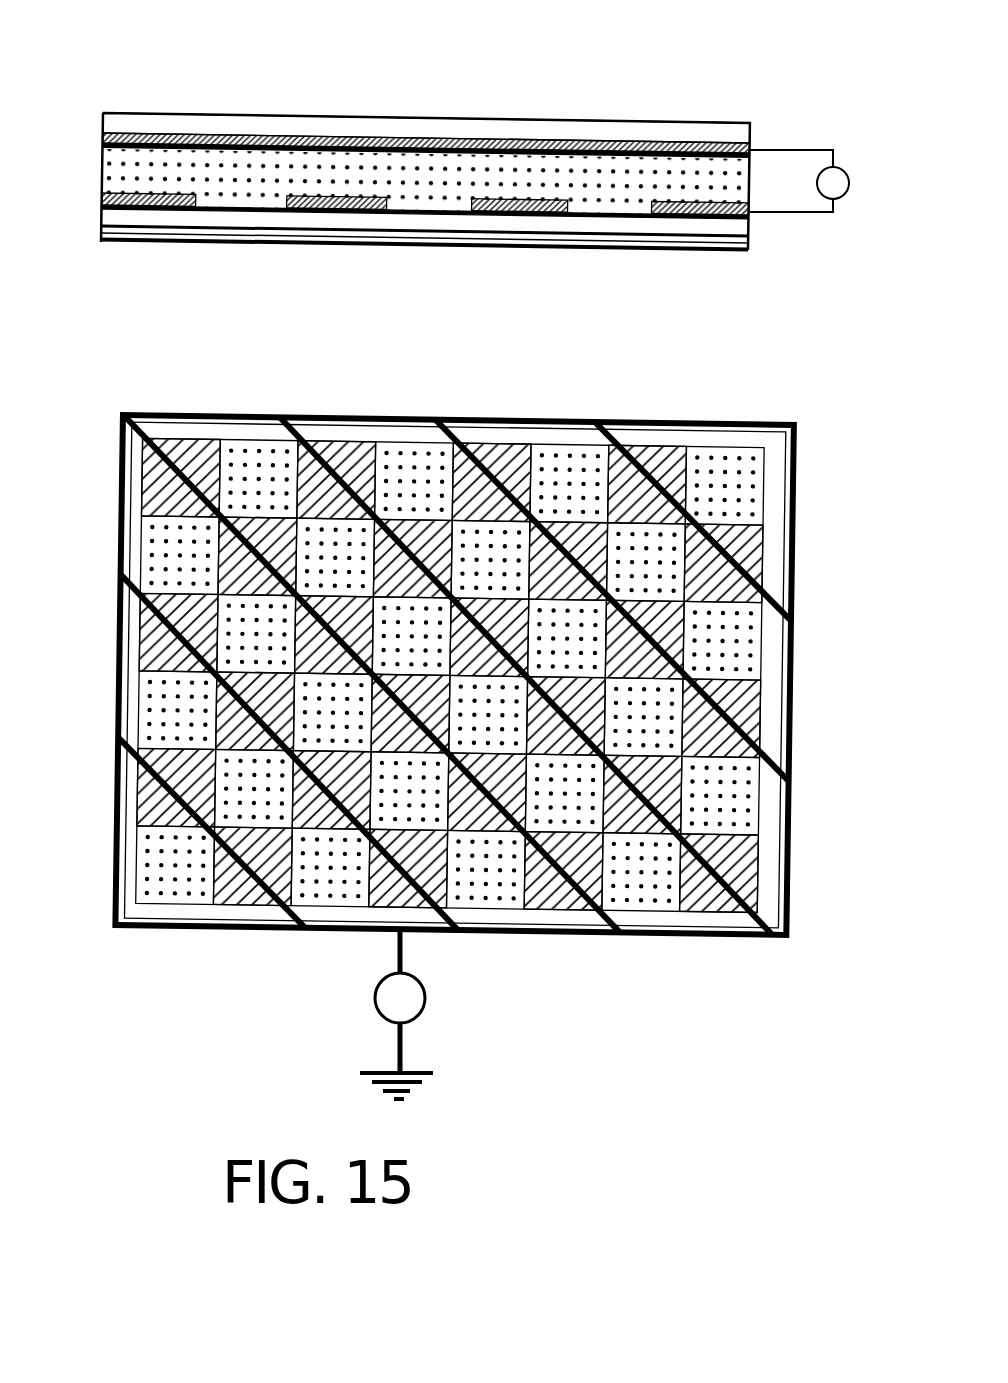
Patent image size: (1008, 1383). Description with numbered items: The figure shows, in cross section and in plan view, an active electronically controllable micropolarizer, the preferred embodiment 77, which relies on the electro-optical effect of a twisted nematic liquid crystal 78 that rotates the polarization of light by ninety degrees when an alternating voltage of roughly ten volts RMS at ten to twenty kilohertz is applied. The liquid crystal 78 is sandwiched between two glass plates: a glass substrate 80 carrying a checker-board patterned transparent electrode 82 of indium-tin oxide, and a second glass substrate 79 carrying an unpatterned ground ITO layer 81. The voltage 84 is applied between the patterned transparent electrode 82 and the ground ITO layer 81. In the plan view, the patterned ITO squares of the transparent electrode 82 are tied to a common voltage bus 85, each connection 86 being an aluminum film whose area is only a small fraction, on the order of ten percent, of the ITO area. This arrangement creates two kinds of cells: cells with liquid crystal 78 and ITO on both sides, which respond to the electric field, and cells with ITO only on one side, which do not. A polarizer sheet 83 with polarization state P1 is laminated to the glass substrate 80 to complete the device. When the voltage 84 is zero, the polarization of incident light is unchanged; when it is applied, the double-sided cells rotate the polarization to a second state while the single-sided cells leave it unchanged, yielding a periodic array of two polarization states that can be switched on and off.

The preferred embodiment 77 is at (322, 80).
The twisted nematic liquid crystal 78 is at (122, 172).
The second glass substrate 79 is at (168, 114).
The glass substrate 80 is at (113, 218).
The unpatterned ground ITO layer 81 is at (105, 143).
The checker-board patterned transparent electrode 82 is at (107, 201).
The polarizer sheet 83 is at (197, 236).
The voltage 84 is at (850, 186).
The common voltage bus 85 is at (403, 416).
The connection 86 is at (250, 890).